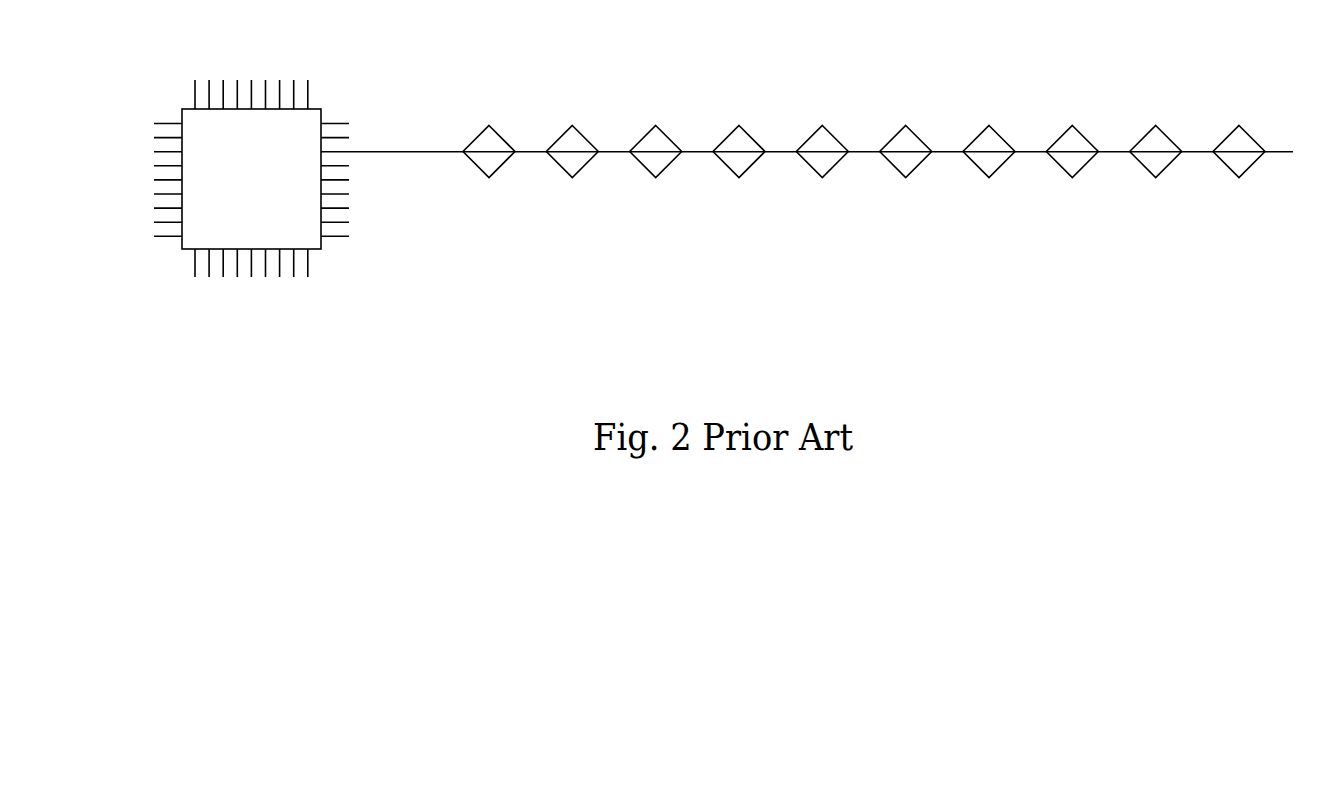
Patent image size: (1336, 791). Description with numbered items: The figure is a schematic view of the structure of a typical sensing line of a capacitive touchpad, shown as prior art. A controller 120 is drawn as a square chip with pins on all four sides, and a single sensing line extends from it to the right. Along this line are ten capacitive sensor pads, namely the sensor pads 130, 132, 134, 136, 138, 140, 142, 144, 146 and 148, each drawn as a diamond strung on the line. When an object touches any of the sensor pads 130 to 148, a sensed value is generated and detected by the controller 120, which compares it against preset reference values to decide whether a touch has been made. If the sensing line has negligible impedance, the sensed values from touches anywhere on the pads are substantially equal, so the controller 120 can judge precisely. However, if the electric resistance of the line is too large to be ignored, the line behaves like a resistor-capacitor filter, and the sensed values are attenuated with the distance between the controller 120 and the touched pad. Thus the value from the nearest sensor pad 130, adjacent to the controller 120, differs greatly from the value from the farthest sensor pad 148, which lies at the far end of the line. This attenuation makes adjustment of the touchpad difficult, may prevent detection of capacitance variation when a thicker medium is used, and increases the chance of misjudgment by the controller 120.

The controller 120 is at (313, 108).
The capacitive sensor pad 130 is at (500, 137).
The capacitive sensor pad 132 is at (583, 137).
The capacitive sensor pad 134 is at (667, 137).
The capacitive sensor pad 136 is at (750, 137).
The capacitive sensor pad 138 is at (833, 137).
The capacitive sensor pad 140 is at (917, 137).
The capacitive sensor pad 142 is at (1000, 137).
The capacitive sensor pad 144 is at (1083, 137).
The capacitive sensor pad 146 is at (1167, 137).
The capacitive sensor pad 148 is at (1250, 137).